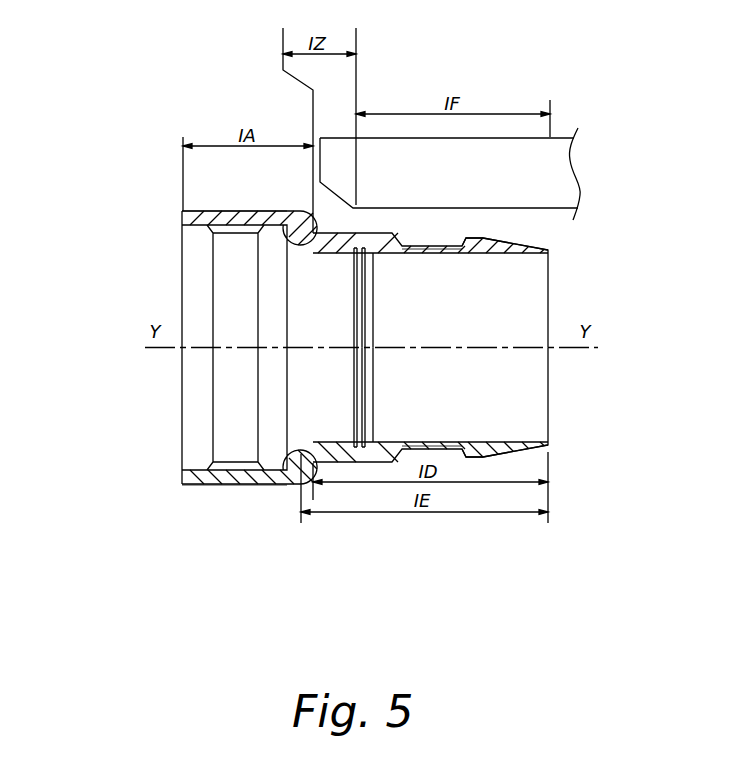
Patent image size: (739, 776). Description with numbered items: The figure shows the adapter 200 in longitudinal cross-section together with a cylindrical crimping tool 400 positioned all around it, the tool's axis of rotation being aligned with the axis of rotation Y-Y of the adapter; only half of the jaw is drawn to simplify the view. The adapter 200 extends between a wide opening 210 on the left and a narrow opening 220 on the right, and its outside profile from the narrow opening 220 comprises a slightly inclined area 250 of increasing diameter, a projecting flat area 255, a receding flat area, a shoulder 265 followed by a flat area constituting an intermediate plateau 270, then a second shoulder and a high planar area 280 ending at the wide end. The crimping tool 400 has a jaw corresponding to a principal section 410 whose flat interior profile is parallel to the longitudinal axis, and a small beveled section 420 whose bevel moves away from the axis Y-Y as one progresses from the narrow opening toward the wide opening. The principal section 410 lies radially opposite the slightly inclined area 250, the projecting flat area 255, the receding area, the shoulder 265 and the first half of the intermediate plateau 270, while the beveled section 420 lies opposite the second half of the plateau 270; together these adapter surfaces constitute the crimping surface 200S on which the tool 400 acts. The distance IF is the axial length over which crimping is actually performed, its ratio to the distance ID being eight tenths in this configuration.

The adapter 200 is at (154, 120).
The crimping surface 200S is at (502, 548).
The wide opening 210 is at (119, 381).
The narrow opening 220 is at (588, 378).
The slightly inclined area 250 is at (526, 251).
The projecting flat area 255 is at (469, 240).
The shoulder 265 is at (388, 246).
The intermediate plateau 270 is at (431, 251).
The high planar area 280 is at (227, 315).
The crimping tool 400 is at (605, 112).
The principal section 410 is at (537, 197).
The small beveled section 420 is at (346, 185).